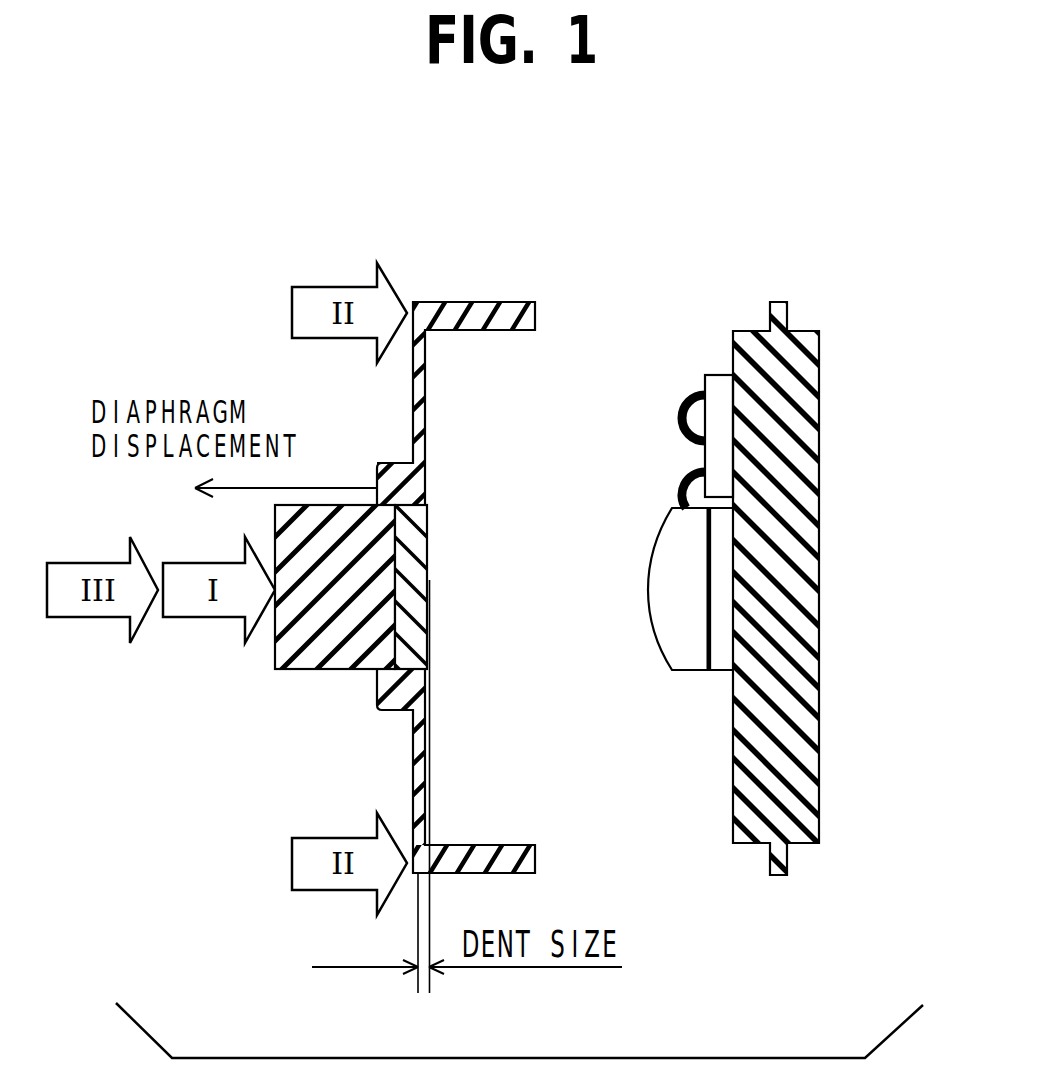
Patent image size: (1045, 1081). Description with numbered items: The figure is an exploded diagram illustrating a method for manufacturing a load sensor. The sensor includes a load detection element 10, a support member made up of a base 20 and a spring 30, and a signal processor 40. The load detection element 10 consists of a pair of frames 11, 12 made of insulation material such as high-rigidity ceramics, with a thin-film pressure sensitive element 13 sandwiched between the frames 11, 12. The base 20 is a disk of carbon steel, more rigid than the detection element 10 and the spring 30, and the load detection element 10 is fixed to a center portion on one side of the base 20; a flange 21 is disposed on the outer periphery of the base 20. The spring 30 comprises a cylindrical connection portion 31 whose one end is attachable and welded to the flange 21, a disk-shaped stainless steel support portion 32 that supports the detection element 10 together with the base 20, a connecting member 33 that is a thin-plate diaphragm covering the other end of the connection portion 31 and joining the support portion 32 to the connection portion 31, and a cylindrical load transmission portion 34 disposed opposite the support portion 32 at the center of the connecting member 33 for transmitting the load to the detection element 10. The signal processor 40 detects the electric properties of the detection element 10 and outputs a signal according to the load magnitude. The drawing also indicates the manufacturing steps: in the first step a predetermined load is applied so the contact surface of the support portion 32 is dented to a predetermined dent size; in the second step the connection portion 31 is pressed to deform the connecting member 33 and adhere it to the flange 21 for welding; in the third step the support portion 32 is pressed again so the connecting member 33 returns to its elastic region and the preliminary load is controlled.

The load detection element 10 is at (641, 655).
The frame 11 is at (687, 660).
The frame 12 is at (722, 660).
The pressure sensitive element 13 is at (713, 663).
The base 20 is at (794, 579).
The flange 21 is at (779, 311).
The spring 30 is at (501, 528).
The connection portion 31 is at (537, 313).
The support portion 32 is at (430, 535).
The connecting member 33 is at (422, 417).
The load transmission portion 34 is at (340, 658).
The signal processor 40 is at (712, 383).